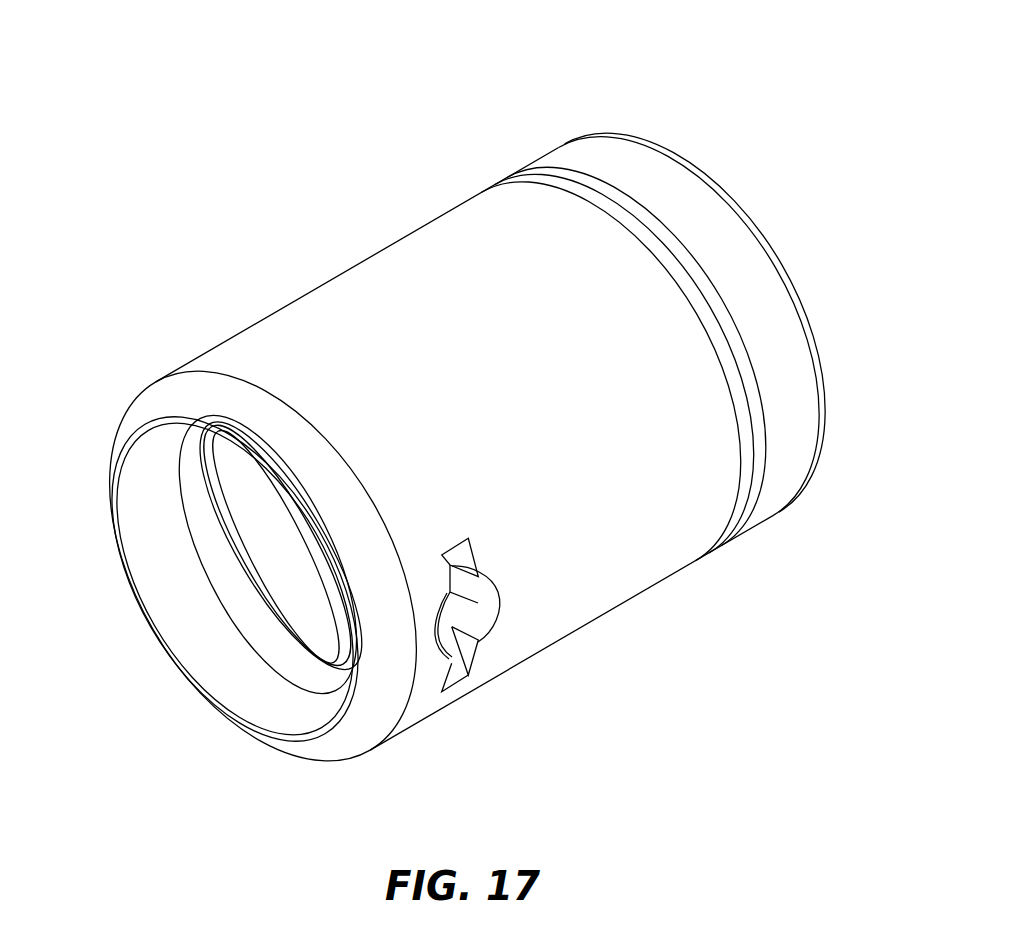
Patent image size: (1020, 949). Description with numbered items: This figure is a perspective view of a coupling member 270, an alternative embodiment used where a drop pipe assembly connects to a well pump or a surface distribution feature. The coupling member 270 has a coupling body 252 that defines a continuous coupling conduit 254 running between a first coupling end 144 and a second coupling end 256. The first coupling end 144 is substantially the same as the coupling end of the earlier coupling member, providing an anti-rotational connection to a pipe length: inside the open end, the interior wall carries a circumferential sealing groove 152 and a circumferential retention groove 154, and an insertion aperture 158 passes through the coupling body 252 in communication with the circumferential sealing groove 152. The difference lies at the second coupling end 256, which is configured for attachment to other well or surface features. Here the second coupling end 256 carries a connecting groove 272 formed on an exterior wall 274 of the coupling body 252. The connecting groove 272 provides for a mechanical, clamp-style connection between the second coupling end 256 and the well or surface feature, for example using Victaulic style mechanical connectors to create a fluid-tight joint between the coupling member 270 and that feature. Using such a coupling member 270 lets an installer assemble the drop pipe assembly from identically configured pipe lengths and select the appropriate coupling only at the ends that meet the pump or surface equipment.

The coupling member 270 is at (557, 76).
The coupling body 252 is at (373, 255).
The exterior wall 274 is at (673, 520).
The first coupling end 144 is at (240, 722).
The continuous coupling conduit 254 is at (267, 561).
The circumferential retention groove 154 is at (208, 479).
The circumferential sealing groove 152 is at (342, 592).
The insertion aperture 158 is at (477, 609).
The connecting groove 272 is at (670, 258).
The second coupling end 256 is at (800, 300).